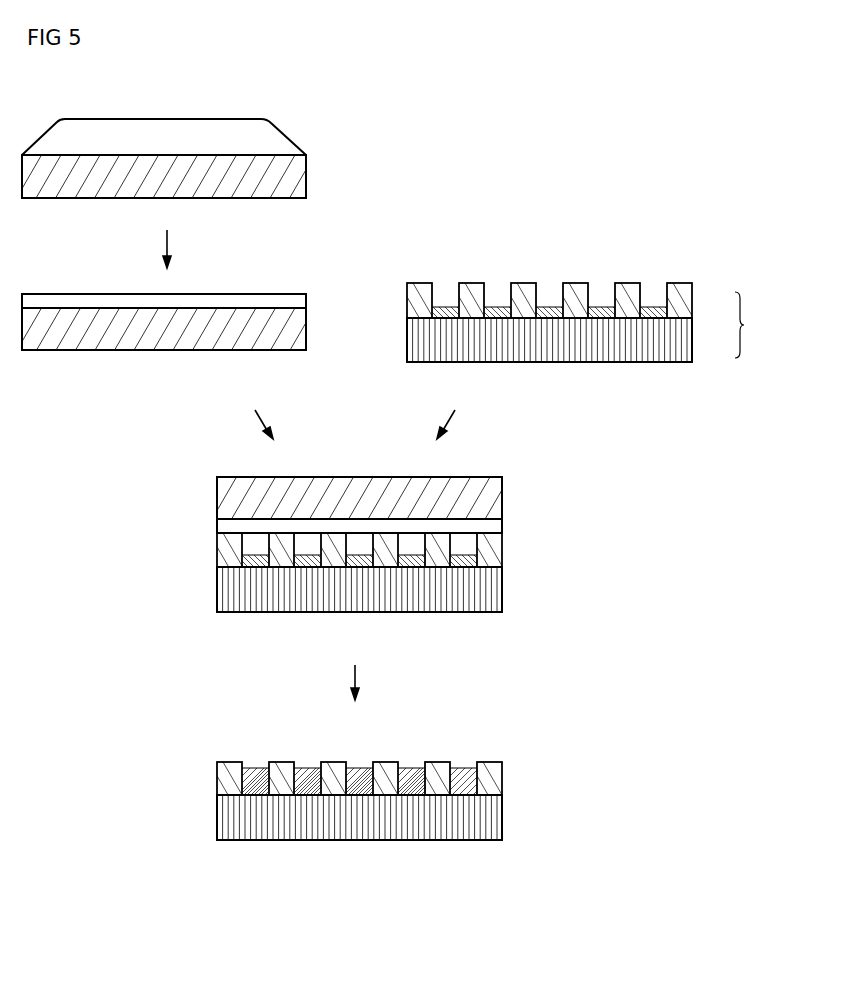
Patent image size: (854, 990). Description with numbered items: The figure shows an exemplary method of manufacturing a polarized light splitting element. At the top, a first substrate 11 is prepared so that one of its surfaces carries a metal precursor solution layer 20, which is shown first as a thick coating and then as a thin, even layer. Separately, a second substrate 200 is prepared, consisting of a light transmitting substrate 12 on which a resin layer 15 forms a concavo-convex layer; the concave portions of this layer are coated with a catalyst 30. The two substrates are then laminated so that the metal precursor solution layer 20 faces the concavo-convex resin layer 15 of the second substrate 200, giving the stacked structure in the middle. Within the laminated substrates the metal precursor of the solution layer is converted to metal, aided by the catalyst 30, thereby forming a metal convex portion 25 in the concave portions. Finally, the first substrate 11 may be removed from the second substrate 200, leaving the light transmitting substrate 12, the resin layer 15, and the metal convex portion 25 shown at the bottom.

The first substrate 11 is at (306, 178).
The metal precursor solution layer 20 is at (286, 133).
The light transmitting substrate 12 is at (692, 338).
The resin layer 15 is at (692, 304).
The catalyst 30 is at (653, 305).
The metal convex portion 25 is at (417, 775).
The second substrate 200 is at (759, 325).